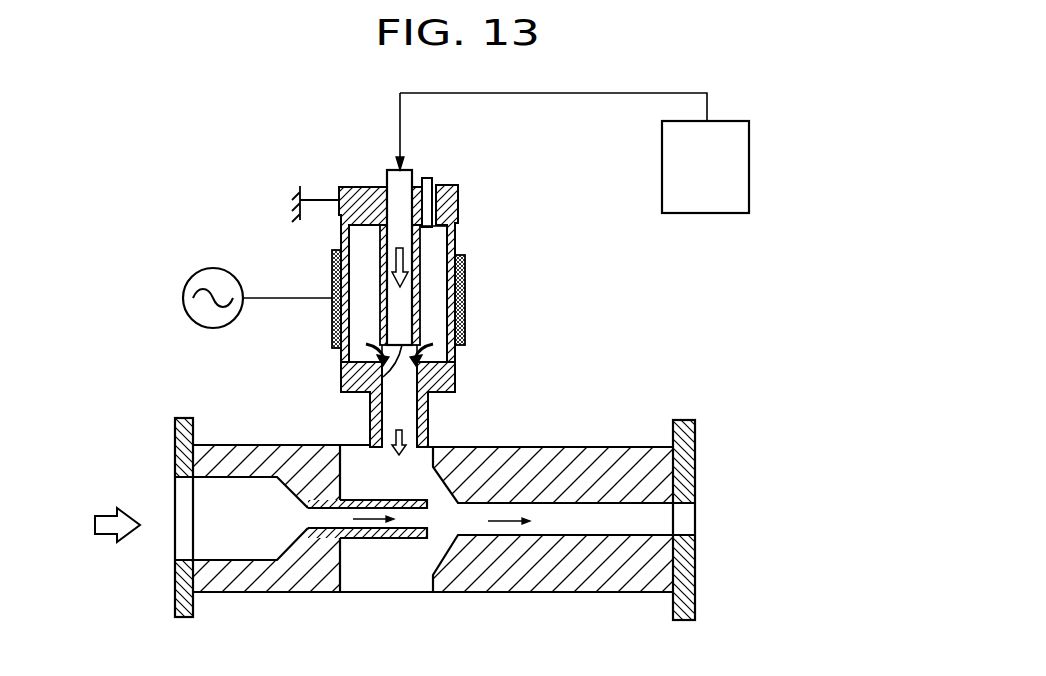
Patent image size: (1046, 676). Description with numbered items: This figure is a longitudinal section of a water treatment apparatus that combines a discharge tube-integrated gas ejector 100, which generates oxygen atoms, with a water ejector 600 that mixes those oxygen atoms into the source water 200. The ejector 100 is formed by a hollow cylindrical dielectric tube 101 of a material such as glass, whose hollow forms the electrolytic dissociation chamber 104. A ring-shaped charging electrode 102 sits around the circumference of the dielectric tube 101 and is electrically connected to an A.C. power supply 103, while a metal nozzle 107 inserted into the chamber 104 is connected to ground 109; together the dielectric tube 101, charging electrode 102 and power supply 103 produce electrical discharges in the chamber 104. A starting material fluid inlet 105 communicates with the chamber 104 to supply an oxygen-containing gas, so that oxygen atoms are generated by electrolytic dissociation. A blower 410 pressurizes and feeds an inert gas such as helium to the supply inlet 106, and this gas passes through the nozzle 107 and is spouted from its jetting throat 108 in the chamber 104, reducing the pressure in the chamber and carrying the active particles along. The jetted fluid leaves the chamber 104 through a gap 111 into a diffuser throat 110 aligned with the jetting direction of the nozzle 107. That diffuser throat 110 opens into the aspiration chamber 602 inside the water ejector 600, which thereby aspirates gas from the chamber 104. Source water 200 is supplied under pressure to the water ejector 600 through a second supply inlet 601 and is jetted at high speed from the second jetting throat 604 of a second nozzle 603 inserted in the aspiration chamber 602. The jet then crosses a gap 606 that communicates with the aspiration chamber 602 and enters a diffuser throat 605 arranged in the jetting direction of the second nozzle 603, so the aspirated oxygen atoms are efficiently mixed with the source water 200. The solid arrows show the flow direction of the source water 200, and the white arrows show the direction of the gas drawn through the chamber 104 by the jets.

The ejector 100 is at (460, 203).
The dielectric tube 101 is at (462, 240).
The charging electrode 102 is at (465, 320).
The A.C. power supply 103 is at (217, 268).
The electrolytic dissociation chamber 104 is at (432, 333).
The starting material fluid inlet 105 is at (440, 176).
The supply inlet 106 is at (405, 168).
The nozzle 107 is at (420, 288).
The jetting throat 108 is at (341, 372).
The ground 109 is at (303, 188).
The diffuser throat 110 is at (371, 412).
The gap 111 is at (437, 397).
The source water 200 is at (103, 514).
The blower 410 is at (749, 165).
The water ejector 600 is at (600, 447).
The second supply inlet 601 is at (175, 498).
The aspiration chamber 602 is at (363, 575).
The second nozzle 603 is at (400, 542).
The second jetting throat 604 is at (428, 522).
The diffuser throat 605 is at (585, 522).
The gap 606 is at (440, 500).